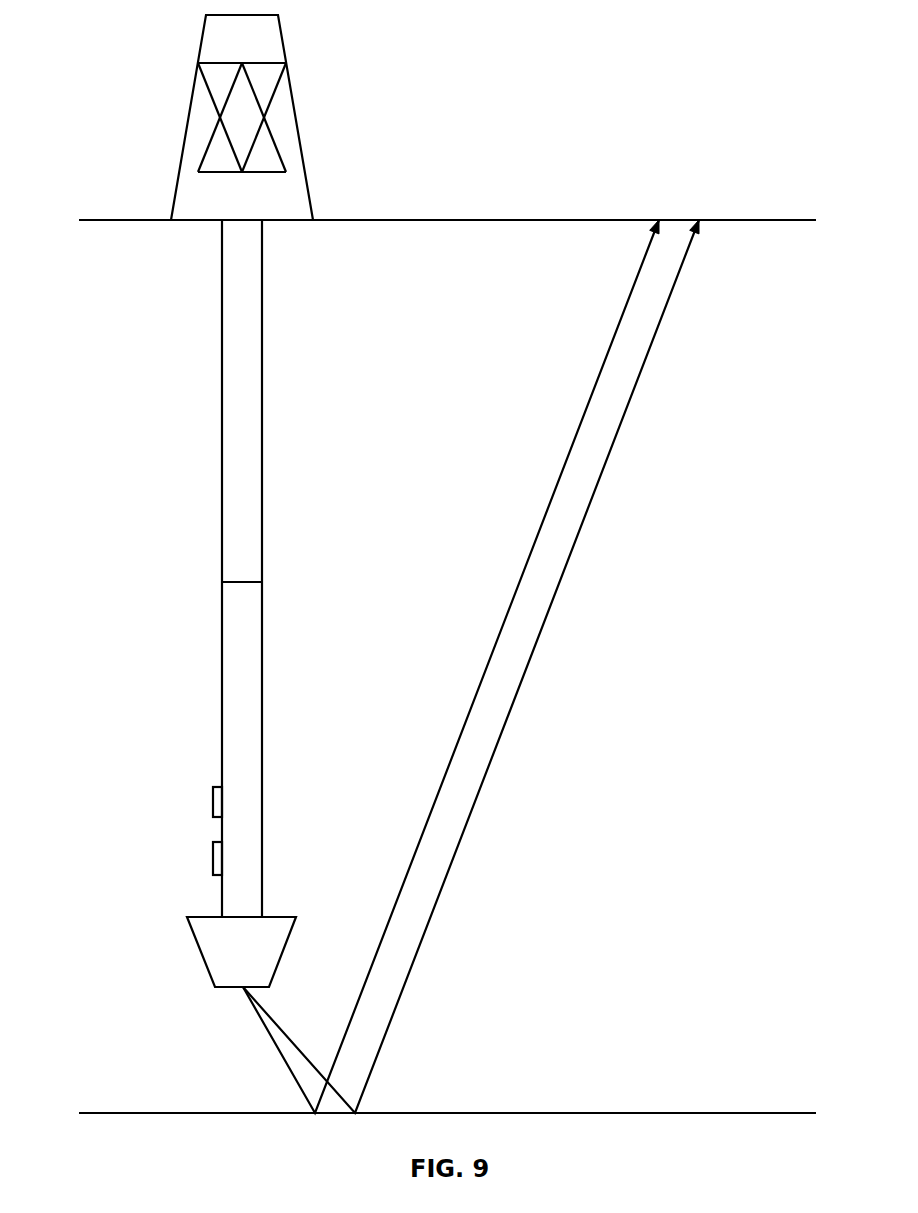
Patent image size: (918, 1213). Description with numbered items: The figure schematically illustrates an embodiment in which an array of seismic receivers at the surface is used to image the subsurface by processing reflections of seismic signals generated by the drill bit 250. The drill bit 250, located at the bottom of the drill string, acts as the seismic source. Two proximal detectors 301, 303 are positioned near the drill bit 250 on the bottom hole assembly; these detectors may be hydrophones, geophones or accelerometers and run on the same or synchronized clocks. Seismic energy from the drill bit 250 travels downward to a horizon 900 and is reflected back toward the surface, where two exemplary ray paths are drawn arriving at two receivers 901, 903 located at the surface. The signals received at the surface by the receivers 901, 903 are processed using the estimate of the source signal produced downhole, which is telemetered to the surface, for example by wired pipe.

The drill bit 250 is at (201, 952).
The proximal detector 301 is at (213, 858).
The proximal detector 303 is at (213, 803).
The horizon 900 is at (600, 1113).
The receiver 901 is at (538, 532).
The receiver 903 is at (598, 483).